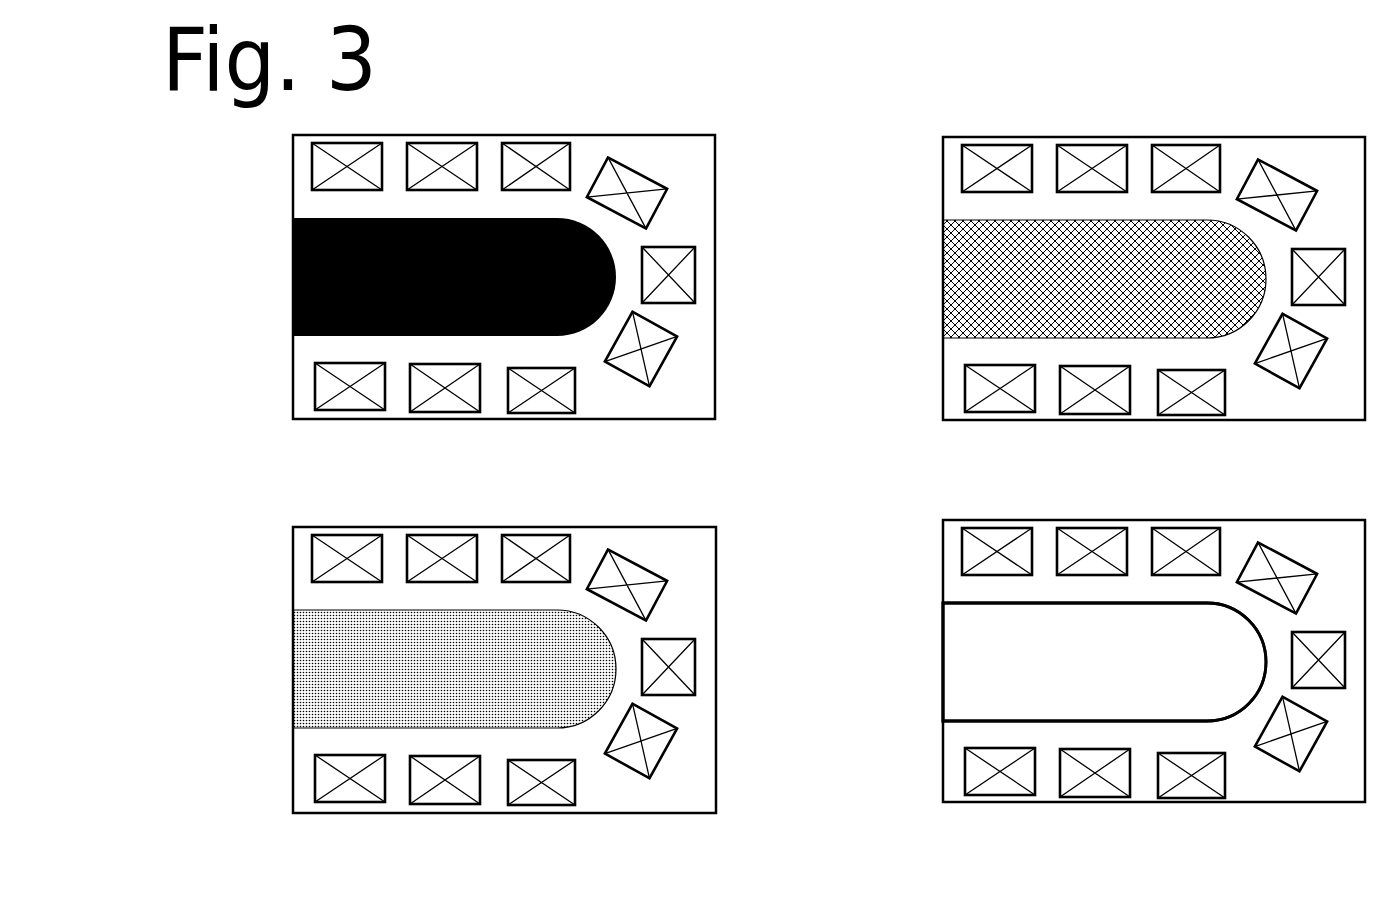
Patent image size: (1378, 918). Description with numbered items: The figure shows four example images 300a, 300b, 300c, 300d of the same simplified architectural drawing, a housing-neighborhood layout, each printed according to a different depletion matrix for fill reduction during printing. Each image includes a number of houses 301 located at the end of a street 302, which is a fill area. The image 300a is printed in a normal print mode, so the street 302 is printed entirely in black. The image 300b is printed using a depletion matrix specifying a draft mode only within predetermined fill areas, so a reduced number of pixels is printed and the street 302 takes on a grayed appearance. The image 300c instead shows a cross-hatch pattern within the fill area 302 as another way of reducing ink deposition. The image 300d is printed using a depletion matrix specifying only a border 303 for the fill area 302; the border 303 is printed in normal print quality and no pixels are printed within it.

The image 300a is at (538, 256).
The image 300b is at (538, 649).
The image 300c is at (1160, 257).
The image 300d is at (1160, 640).
The houses 301 is at (828, 443).
The street 302 is at (731, 473).
The border 303 is at (1104, 662).